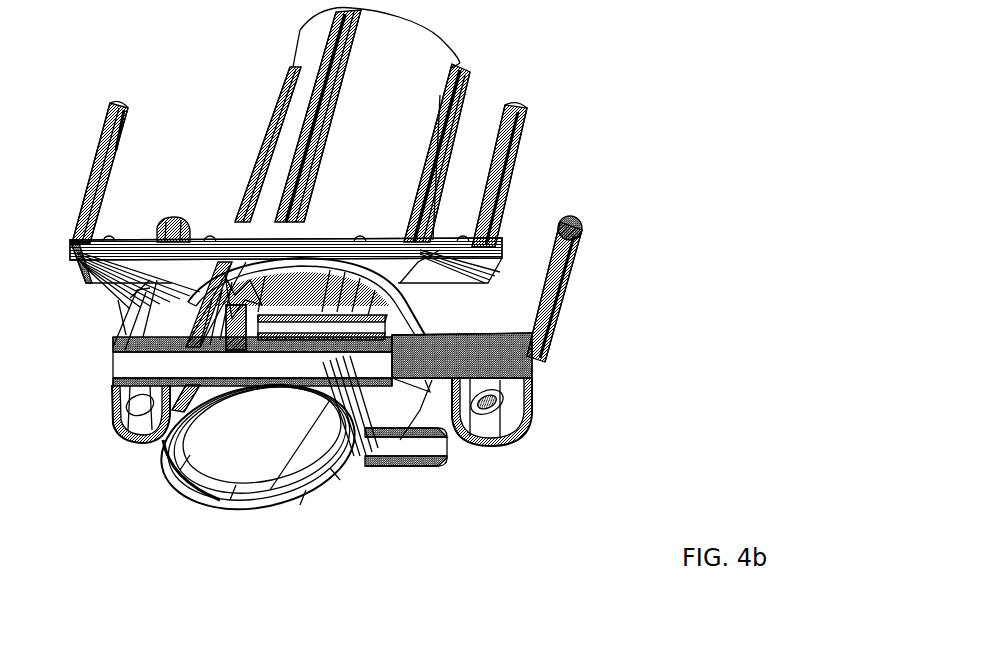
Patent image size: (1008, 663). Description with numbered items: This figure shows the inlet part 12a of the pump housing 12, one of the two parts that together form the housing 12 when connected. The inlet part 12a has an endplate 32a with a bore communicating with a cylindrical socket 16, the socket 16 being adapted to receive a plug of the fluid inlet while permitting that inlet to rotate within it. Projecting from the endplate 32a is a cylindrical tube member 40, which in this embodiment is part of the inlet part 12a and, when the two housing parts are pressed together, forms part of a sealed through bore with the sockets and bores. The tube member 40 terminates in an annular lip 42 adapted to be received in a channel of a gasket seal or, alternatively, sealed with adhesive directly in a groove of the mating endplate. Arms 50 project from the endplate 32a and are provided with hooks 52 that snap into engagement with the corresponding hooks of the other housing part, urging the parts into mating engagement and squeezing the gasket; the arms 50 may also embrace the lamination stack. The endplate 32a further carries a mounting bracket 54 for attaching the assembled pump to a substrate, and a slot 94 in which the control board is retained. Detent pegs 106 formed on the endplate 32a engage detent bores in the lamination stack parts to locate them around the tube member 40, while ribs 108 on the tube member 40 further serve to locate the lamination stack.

The housing 12 is at (578, 105).
The inlet part 12a is at (340, 493).
The cylindrical socket 16 is at (227, 435).
The endplate 32a is at (537, 375).
The tube member 40 is at (403, 77).
The annular lip 42 is at (440, 40).
The projecting arms 50 is at (118, 192).
The hooks 52 is at (520, 143).
The mounting bracket 54 is at (517, 393).
The slot 94 is at (440, 460).
The detent peg 106 is at (458, 227).
The ribs 108 is at (307, 115).